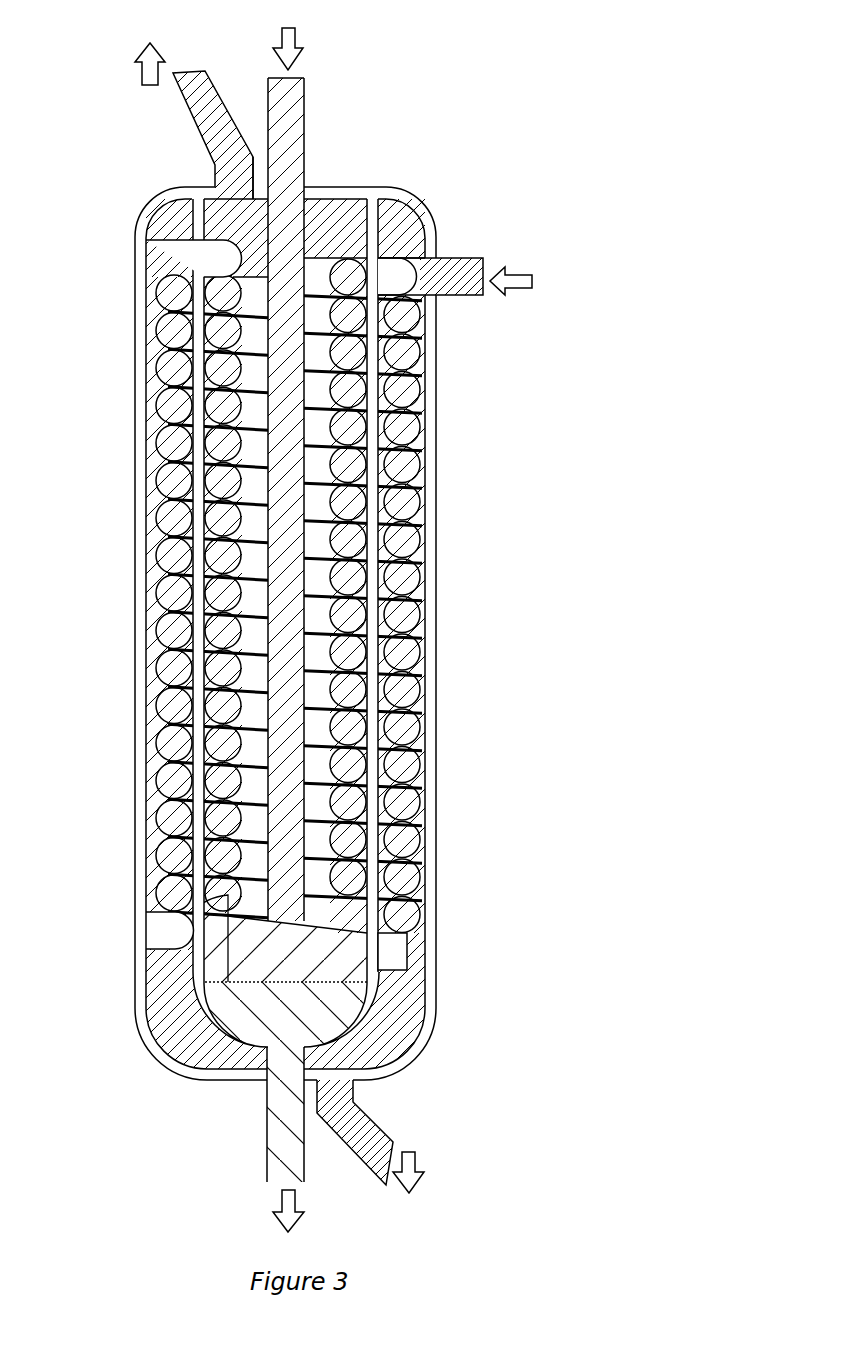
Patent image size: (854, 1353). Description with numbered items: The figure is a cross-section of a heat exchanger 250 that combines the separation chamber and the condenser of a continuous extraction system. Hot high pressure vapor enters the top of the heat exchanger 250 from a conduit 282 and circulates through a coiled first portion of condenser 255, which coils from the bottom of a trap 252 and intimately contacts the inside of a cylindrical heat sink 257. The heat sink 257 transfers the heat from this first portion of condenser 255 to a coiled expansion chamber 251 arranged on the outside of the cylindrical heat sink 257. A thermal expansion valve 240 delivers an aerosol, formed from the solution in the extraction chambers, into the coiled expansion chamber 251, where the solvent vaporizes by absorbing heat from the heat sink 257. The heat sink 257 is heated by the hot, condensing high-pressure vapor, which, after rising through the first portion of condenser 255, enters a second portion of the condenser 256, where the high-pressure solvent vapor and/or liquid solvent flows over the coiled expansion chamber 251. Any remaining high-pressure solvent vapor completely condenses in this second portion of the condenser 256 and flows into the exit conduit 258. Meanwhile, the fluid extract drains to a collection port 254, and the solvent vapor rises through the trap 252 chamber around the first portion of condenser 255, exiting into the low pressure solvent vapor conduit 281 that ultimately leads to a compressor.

The heat exchanger 250 is at (430, 54).
The thermal expansion valve 240 is at (422, 258).
The coiled expansion chamber 251 is at (176, 283).
The trap 252 is at (333, 222).
The collection port 254 is at (230, 1047).
The first portion of condenser 255 is at (165, 1040).
The second portion of the condenser 256 is at (172, 238).
The cylindrical heat sink 257 is at (375, 220).
The exit conduit 258 is at (378, 1122).
The low pressure solvent vapor conduit 281 is at (170, 114).
The conduit 282 is at (297, 117).